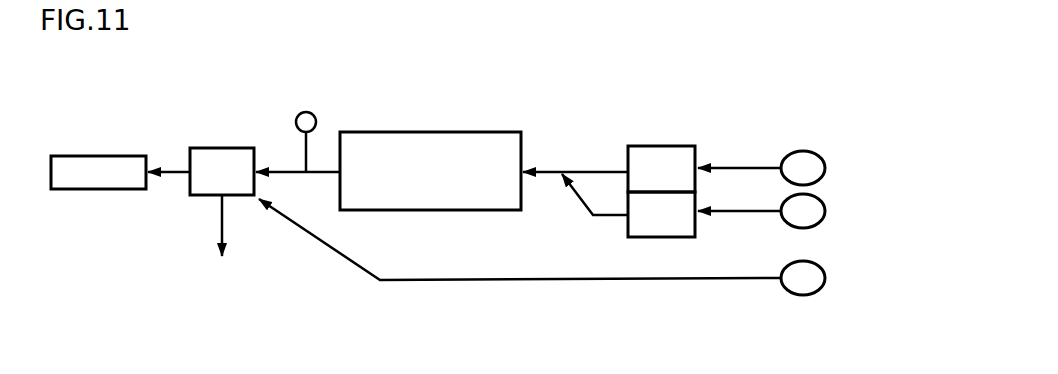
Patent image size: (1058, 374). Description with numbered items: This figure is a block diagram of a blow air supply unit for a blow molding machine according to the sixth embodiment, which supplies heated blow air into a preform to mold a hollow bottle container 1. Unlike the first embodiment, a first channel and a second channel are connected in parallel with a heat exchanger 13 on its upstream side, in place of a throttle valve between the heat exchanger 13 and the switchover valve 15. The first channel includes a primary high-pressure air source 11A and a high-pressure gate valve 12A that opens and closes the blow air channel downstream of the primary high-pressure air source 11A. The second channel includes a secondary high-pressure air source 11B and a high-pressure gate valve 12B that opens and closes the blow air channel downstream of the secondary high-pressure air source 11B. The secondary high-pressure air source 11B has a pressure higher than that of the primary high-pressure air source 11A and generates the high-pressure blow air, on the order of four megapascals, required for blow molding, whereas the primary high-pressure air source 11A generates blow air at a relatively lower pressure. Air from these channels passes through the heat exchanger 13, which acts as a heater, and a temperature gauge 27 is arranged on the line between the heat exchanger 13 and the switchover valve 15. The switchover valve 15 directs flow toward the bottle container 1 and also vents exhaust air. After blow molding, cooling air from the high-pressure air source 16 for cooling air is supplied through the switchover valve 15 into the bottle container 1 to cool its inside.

The hollow bottle container 1 is at (98, 190).
The switchover valve 15 is at (216, 148).
The temperature gauge 27 is at (306, 112).
The heat exchanger 13 is at (435, 132).
The high-pressure gate valve 12B is at (666, 146).
The high-pressure gate valve 12A is at (667, 238).
The secondary high-pressure air source 11B is at (803, 151).
The primary high-pressure air source 11A is at (826, 211).
The high-pressure air source for cooling air 16 is at (806, 296).